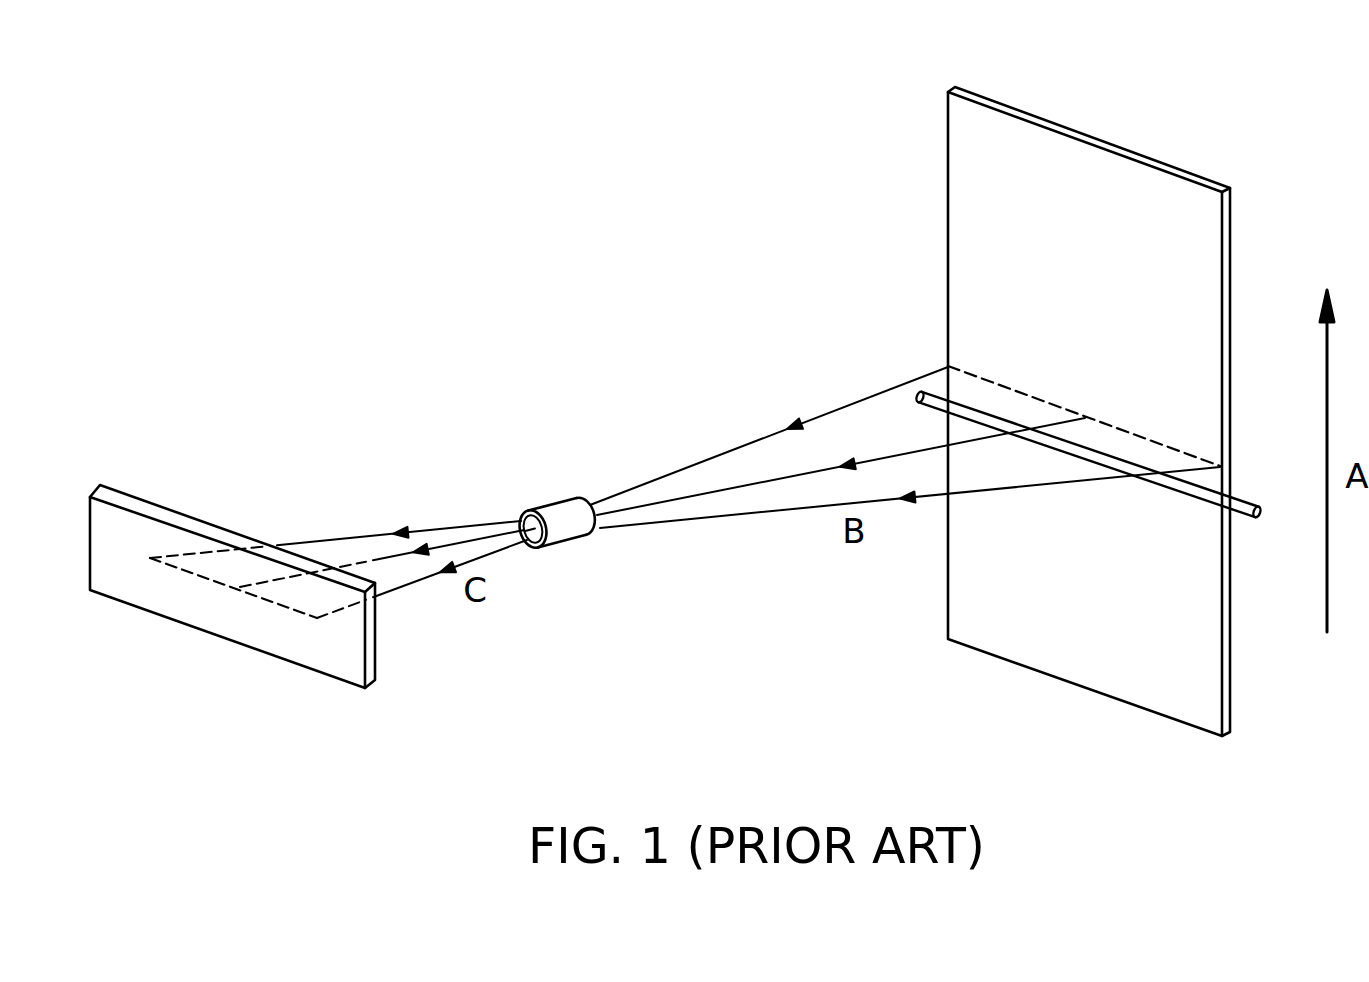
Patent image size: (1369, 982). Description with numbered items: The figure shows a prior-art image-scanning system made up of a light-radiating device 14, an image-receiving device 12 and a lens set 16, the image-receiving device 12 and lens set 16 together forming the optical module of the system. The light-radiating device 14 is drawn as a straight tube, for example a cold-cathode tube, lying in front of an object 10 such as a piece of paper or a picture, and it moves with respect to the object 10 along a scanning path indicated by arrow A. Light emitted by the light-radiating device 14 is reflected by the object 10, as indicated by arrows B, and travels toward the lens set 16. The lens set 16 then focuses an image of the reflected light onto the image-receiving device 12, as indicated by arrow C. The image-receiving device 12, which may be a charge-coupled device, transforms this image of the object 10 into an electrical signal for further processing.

The object 10 is at (1190, 212).
The image-receiving device 12 is at (338, 663).
The light-radiating device 14 is at (1177, 485).
The lens set 16 is at (577, 545).